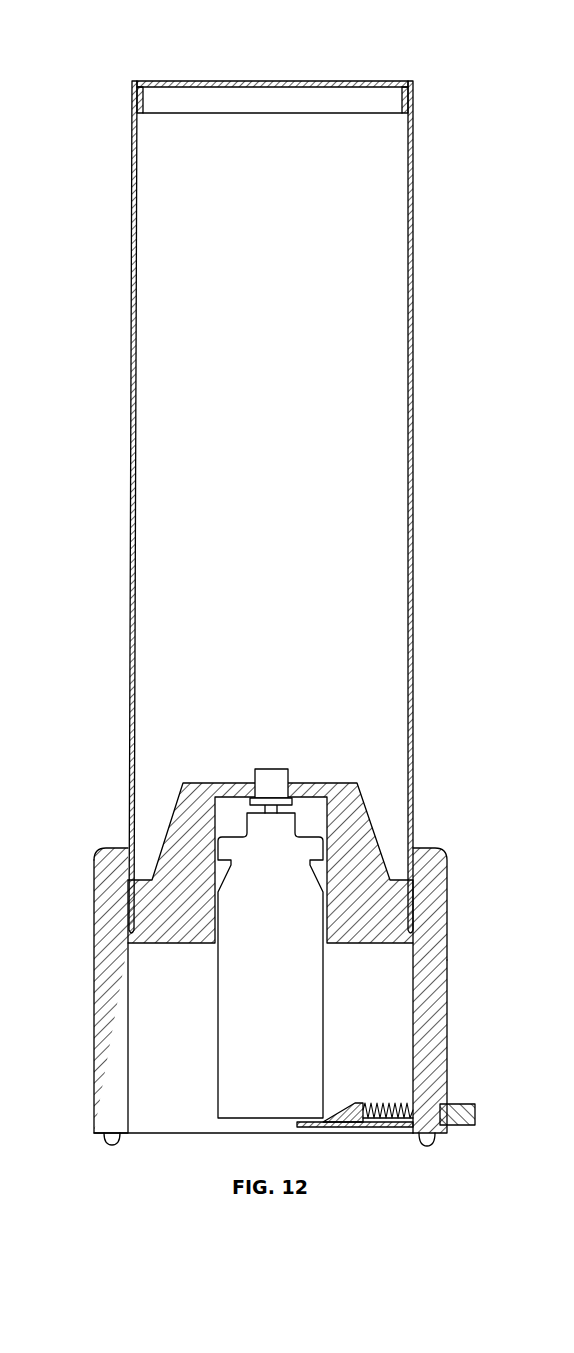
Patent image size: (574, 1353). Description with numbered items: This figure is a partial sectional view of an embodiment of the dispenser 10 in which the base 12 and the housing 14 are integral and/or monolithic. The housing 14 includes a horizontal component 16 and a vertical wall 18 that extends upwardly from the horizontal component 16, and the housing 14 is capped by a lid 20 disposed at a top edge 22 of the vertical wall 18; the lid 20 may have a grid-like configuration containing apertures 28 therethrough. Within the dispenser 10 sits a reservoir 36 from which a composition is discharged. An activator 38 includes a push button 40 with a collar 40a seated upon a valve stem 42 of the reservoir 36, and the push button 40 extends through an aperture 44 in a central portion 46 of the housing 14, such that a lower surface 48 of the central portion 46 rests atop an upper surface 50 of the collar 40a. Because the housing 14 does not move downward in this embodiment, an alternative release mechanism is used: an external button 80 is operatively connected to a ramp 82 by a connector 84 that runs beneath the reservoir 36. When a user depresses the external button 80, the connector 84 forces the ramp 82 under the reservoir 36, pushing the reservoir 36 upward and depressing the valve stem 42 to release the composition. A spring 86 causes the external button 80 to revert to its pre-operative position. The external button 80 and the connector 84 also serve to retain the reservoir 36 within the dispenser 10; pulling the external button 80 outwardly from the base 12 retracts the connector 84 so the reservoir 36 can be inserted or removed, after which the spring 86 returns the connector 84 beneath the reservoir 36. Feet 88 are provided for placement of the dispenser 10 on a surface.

The dispenser 10 is at (121, 60).
The base 12 is at (447, 1010).
The housing 14 is at (300, 980).
The horizontal component 16 is at (425, 848).
The vertical wall 18 is at (415, 462).
The lid 20 is at (404, 82).
The top edge 22 is at (414, 90).
The apertures 28 is at (306, 77).
The reservoir 36 is at (361, 959).
The activator 38 is at (324, 754).
The push button 40 is at (272, 769).
The collar 40a is at (250, 801).
The valve stem 42 is at (282, 808).
The aperture 44 is at (248, 771).
The central portion 46 is at (190, 783).
The lower surface 48 is at (235, 798).
The upper surface 50 is at (290, 800).
The external button 80 is at (477, 1112).
The ramp 82 is at (362, 1104).
The connector 84 is at (397, 1128).
The spring 86 is at (378, 1104).
The feet 88 is at (112, 1146).